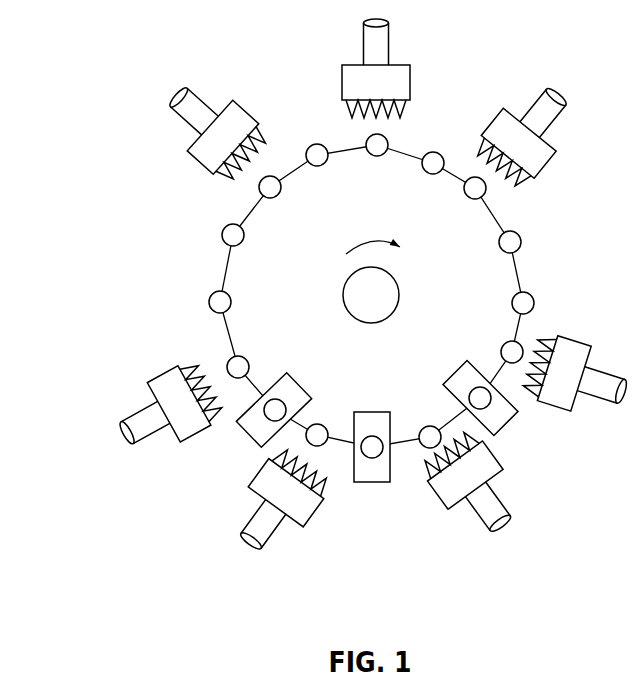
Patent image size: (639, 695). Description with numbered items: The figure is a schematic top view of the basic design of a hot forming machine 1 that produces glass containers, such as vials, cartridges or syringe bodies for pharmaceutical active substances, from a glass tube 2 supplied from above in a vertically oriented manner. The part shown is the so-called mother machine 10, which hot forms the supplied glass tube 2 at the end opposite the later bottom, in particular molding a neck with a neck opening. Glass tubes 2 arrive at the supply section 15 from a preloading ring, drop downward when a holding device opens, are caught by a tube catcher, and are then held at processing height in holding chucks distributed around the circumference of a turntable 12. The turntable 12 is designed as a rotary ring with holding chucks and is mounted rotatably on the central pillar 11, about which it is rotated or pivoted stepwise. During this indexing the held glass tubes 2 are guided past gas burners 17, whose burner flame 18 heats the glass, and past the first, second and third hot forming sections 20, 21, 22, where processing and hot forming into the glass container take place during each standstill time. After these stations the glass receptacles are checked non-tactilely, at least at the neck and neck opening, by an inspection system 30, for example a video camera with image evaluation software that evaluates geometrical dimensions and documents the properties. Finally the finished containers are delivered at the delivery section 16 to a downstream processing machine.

The hot forming machine 1 is at (38, 61).
The mother machine 10 is at (260, 70).
The glass tube 2 is at (522, 238).
The pillar with drive 11 is at (383, 278).
The turntable 12 is at (523, 270).
The supply section 15 is at (225, 245).
The delivery section 16 is at (222, 332).
The gas burner 17 is at (540, 160).
The burner flame 18 is at (482, 140).
The first hot forming section 20 is at (503, 420).
The second hot forming section 21 is at (368, 477).
The third hot forming section 22 is at (257, 428).
The non-tactile inspection system 30 is at (147, 417).